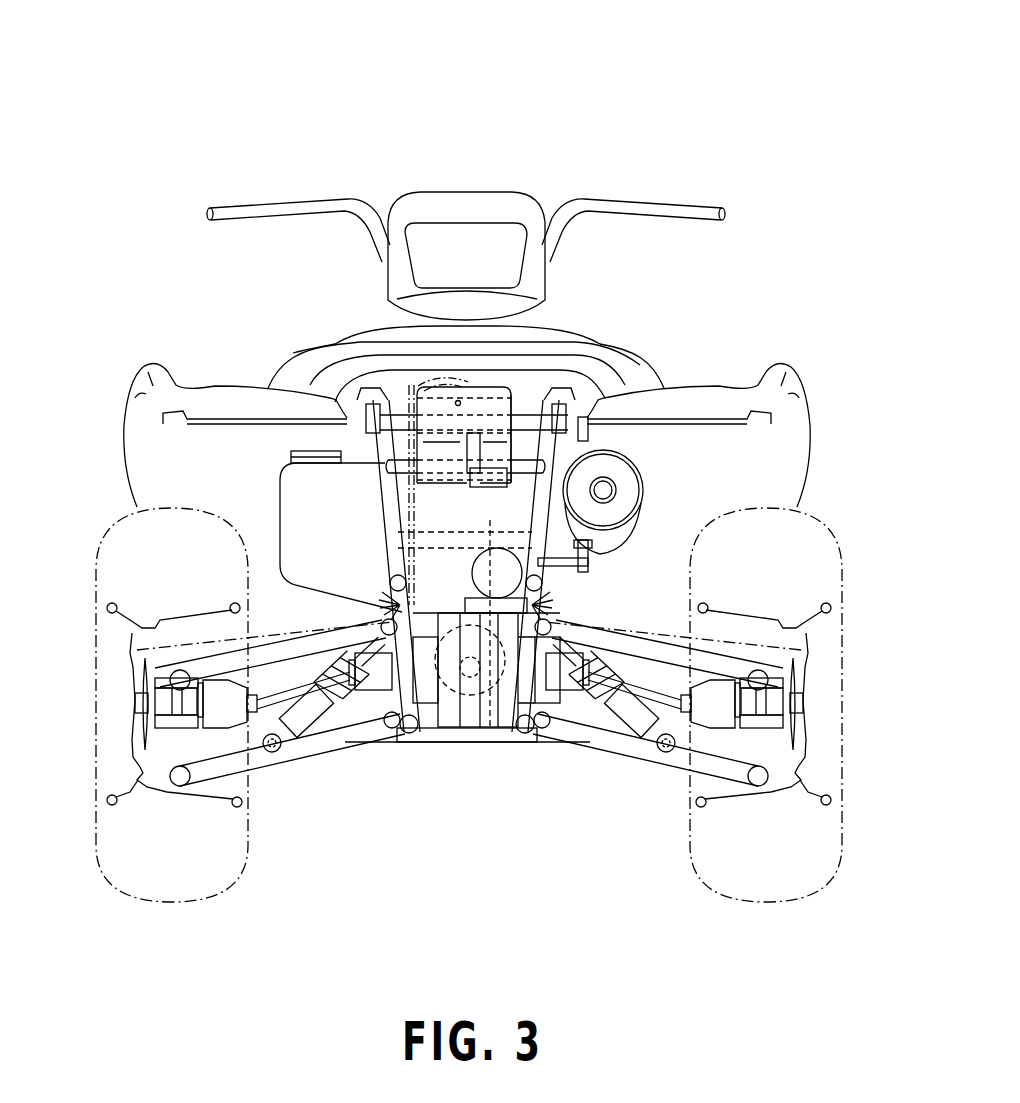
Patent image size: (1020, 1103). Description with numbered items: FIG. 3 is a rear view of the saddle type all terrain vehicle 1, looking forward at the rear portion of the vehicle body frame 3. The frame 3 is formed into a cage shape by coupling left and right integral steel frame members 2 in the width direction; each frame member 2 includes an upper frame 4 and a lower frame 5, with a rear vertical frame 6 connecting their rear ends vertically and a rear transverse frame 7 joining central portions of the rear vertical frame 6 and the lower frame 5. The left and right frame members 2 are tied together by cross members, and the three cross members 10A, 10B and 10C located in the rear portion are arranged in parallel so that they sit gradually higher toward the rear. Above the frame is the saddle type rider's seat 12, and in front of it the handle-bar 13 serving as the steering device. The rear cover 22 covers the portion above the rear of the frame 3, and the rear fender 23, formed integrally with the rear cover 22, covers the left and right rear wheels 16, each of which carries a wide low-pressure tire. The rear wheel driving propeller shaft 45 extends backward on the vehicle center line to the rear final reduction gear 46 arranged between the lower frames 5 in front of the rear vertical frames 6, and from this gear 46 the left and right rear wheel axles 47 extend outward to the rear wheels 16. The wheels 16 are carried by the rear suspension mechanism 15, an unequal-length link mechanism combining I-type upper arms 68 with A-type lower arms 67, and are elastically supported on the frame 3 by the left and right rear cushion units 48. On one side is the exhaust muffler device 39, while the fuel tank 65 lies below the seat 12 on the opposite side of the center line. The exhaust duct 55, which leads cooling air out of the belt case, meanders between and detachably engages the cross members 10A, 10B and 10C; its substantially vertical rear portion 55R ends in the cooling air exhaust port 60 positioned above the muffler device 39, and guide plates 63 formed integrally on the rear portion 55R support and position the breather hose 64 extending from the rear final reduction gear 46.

The all terrain vehicle 1 is at (430, 78).
The frame members 2 is at (345, 380).
The vehicle body frame 3 is at (460, 760).
The upper frames 4 is at (370, 424).
The lower frames 5 is at (408, 738).
The rear vertical frames 6 is at (398, 512).
The rear transverse frames 7 is at (540, 590).
The cross member 10A is at (540, 452).
The cross member 10B is at (406, 546).
The cross member 10C is at (507, 712).
The rider's seat 12 is at (590, 350).
The handle-bar 13 is at (668, 206).
The rear suspension mechanism 15 is at (643, 768).
The rear wheels 16 is at (250, 872).
The rear cover 22 is at (752, 378).
The rear fender 23 is at (203, 400).
The exhaust muffler device 39 is at (632, 490).
The rear wheel driving propeller shaft 45 is at (488, 735).
The rear final reduction gear 46 is at (428, 693).
The rear wheel axles 47 is at (260, 748).
The rear cushion units 48 is at (137, 651).
The exhaust duct 55 is at (460, 370).
The rear portion of exhaust duct 55R is at (492, 400).
The cooling air exhaust port 60 is at (503, 478).
The guide plates 63 is at (403, 385).
The breather hose 64 is at (400, 488).
The fuel tank 65 is at (300, 505).
The A-type lower arms 67 is at (323, 742).
The I-type upper arms 68 is at (172, 680).